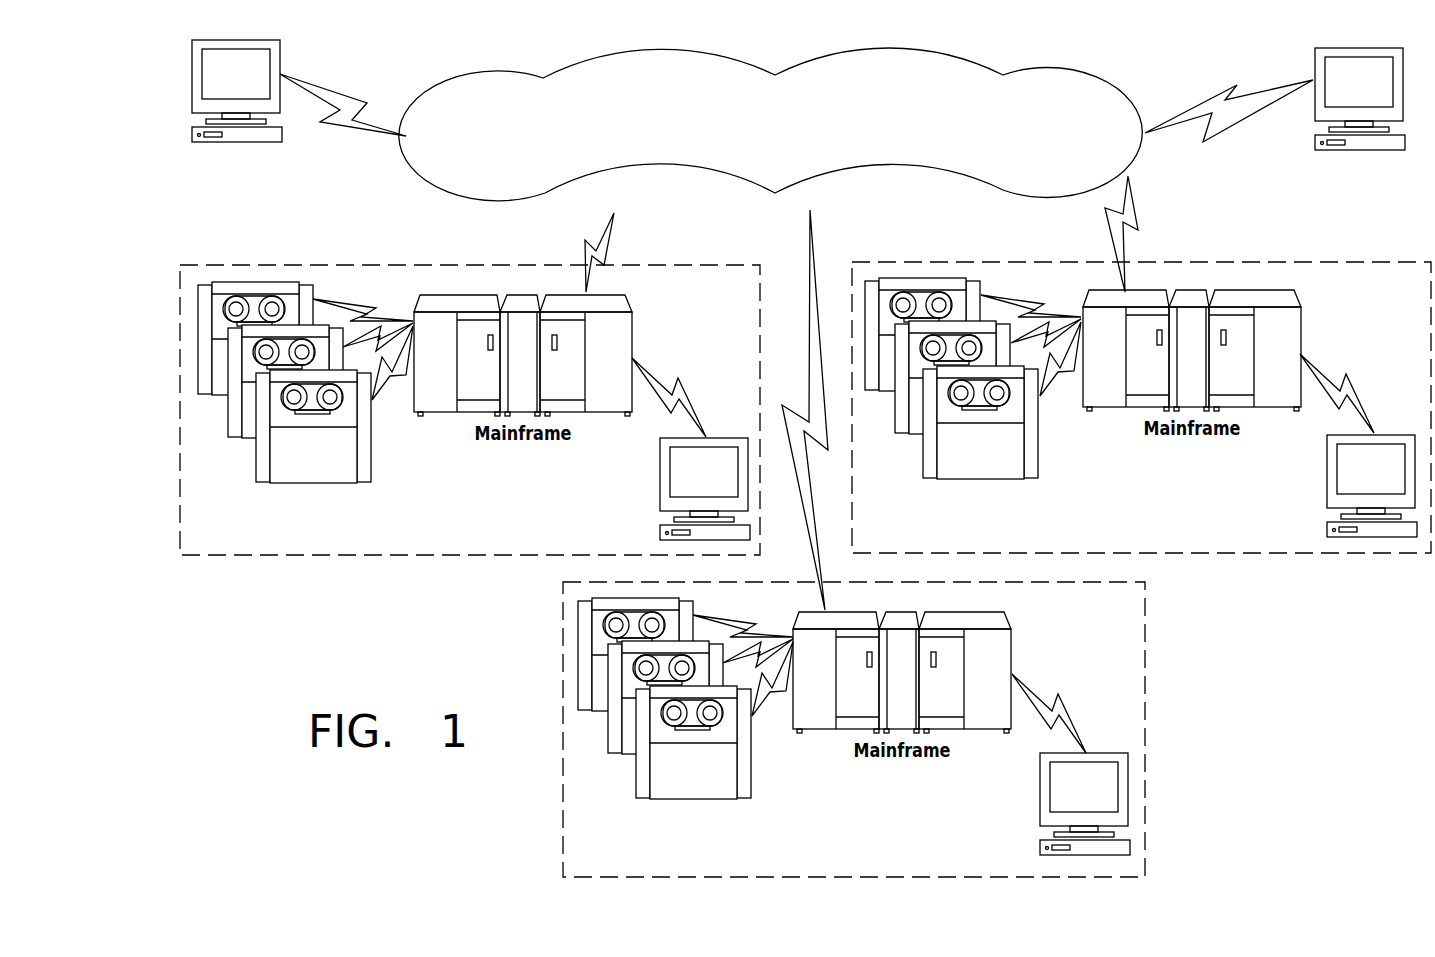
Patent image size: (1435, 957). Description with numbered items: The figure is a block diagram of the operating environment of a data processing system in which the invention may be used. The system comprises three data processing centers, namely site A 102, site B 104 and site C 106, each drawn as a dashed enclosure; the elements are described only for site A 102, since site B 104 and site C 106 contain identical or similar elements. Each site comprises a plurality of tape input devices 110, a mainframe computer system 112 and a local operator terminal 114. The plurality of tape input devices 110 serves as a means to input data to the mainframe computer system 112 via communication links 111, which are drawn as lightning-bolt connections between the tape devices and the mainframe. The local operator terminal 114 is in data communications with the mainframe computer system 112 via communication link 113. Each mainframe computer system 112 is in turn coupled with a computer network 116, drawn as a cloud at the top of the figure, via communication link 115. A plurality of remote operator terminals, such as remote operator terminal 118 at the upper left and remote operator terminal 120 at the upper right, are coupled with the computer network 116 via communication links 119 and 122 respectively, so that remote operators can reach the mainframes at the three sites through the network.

The site A 102 is at (320, 265).
The site B 104 is at (563, 634).
The site C 106 is at (1240, 262).
The tape input devices 110 is at (240, 442).
The communication links 111 is at (394, 300).
The mainframe computer system 112 is at (478, 292).
The communication link 113 is at (661, 372).
The local operator terminal 114 is at (660, 533).
The communication link 115 is at (600, 243).
The computer network 116 is at (582, 78).
The remote operator terminal 118 is at (283, 55).
The communication link 119 is at (374, 133).
The remote operator terminal 120 is at (1315, 60).
The communication link 122 is at (1253, 115).